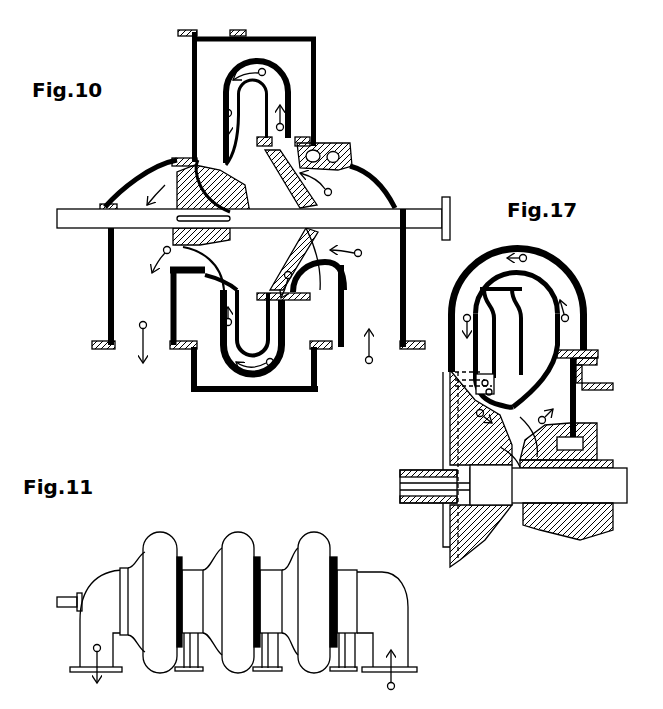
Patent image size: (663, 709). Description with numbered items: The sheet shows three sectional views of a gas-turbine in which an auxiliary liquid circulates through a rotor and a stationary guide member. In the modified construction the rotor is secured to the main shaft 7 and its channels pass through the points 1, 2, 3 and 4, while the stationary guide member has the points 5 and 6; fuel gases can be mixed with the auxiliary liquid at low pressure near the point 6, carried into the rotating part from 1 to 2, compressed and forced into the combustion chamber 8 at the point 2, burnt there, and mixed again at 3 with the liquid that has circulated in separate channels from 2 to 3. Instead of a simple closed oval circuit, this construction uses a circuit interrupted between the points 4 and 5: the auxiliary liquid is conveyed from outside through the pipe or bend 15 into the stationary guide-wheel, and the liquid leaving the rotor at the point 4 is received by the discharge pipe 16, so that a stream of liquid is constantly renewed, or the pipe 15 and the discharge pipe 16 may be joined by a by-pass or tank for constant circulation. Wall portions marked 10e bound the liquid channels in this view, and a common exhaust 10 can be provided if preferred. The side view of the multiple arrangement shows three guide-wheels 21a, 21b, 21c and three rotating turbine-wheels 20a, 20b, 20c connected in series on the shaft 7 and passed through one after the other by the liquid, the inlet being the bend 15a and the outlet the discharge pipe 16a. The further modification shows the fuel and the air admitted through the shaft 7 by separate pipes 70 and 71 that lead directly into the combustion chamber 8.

In FIG. 10, the rotor point 1 is at (284, 128).
In FIG. 17, the rotor point 1 is at (577, 345).
In FIG. 10, the rotor point 2 is at (280, 89).
In FIG. 17, the rotor point 2 is at (517, 338).
In FIG. 10, the rotor point 3 is at (220, 88).
In FIG. 17, the rotor point 3 is at (493, 338).
In FIG. 10, the rotor point 4 is at (158, 174).
In FIG. 17, the rotor point 4 is at (500, 443).
In FIG. 10, the guide member point 5 is at (313, 178).
In FIG. 17, the guide member point 5 is at (566, 442).
In FIG. 10, the guide member point 6 is at (283, 152).
In FIG. 17, the guide member point 6 is at (586, 404).
In FIG. 10, the main shaft 7 is at (108, 218).
In FIG. 17, the main shaft 7 is at (513, 502).
In FIG. 11, the main shaft 7 is at (57, 602).
In FIG. 17, the combustion chamber 8 is at (520, 280).
In FIG. 17, the common exhaust 10 is at (498, 397).
In FIG. 10, the vortex chamber plate 10e is at (202, 152).
In FIG. 10, the pipe or bend 15 is at (384, 267).
In FIG. 11, the outlet elbow 15a is at (387, 622).
In FIG. 10, the discharge pipe 16 is at (144, 288).
In FIG. 11, the inlet elbow 16a is at (107, 612).
In FIG. 11, the rotating turbine-wheel 20a is at (314, 602).
In FIG. 11, the rotating turbine-wheel 20b is at (238, 602).
In FIG. 11, the rotating turbine-wheel 20c is at (160, 602).
In FIG. 11, the guide-wheel 21a is at (343, 577).
In FIG. 11, the guide-wheel 21b is at (265, 577).
In FIG. 11, the guide-wheel 21c is at (188, 574).
In FIG. 17, the separate pipe 70 is at (485, 310).
In FIG. 17, the separate pipe 71 is at (488, 331).